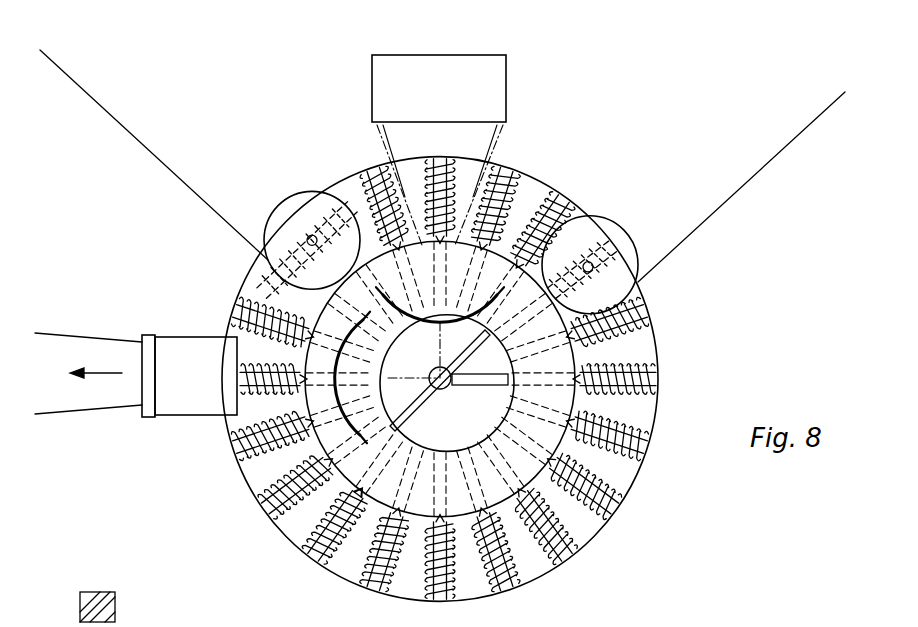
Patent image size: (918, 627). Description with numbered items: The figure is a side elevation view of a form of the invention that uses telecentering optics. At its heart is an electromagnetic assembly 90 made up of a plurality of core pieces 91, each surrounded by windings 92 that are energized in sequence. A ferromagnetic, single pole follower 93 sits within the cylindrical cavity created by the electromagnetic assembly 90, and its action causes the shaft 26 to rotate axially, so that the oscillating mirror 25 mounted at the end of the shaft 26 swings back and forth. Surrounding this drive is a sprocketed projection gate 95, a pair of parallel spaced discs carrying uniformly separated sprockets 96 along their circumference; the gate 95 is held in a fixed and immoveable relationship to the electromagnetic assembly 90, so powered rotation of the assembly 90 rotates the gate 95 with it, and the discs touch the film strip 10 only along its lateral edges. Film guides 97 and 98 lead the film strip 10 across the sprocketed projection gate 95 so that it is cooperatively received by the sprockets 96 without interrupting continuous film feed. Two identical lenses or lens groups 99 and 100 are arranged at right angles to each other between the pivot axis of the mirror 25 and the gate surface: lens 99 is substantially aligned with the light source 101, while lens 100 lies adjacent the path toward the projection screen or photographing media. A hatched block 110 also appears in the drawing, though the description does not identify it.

The film strip 10 is at (143, 146).
The oscillating mirror 25 is at (413, 410).
The shaft 26 is at (432, 373).
The electromagnetic assembly 90 is at (657, 416).
The core pieces 91 is at (558, 200).
The windings 92 is at (262, 306).
The single pole follower 93 is at (478, 386).
The sprocketed projection gate 95 is at (575, 360).
The sprockets 96 is at (356, 489).
The film guide 97 is at (300, 196).
The film guide 98 is at (606, 226).
The lens 99 is at (470, 290).
The lens 100 is at (345, 358).
The light source 101 is at (490, 55).
The hatched block 110 is at (118, 603).